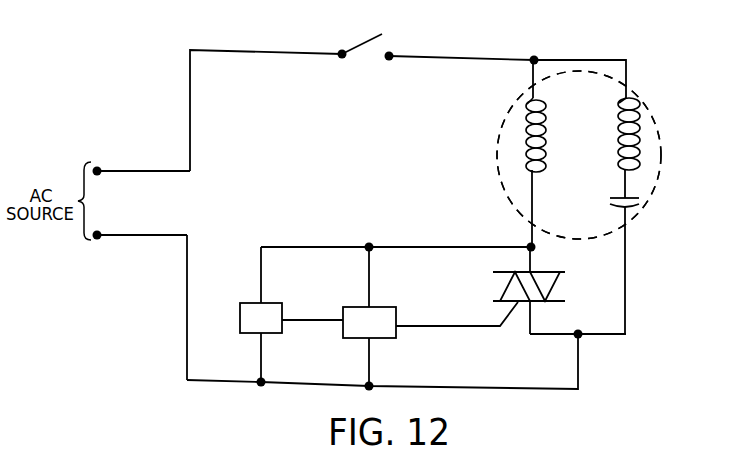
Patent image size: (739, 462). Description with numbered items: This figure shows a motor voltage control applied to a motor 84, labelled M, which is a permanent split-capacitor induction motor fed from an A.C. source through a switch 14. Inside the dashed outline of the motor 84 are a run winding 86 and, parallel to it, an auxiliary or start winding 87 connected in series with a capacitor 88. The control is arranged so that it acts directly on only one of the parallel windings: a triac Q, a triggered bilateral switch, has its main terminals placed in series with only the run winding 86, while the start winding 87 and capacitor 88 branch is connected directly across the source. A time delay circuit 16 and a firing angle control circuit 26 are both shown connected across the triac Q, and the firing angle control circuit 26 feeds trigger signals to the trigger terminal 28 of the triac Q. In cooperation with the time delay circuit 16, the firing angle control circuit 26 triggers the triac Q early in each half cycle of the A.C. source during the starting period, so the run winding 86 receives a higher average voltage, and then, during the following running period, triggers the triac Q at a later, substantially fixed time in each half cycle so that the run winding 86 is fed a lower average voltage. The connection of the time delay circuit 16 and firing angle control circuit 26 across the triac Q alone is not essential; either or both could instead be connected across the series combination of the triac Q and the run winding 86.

The switch 14 is at (364, 43).
The time delay circuit 16 is at (282, 312).
The firing angle control circuit 26 is at (397, 316).
The trigger terminal 28 is at (511, 313).
The motor 84 is at (662, 163).
The run winding 86 is at (509, 135).
The auxiliary or start winding 87 is at (641, 133).
The capacitor 88 is at (640, 199).
The motor M is at (650, 114).
The triac Q is at (536, 286).